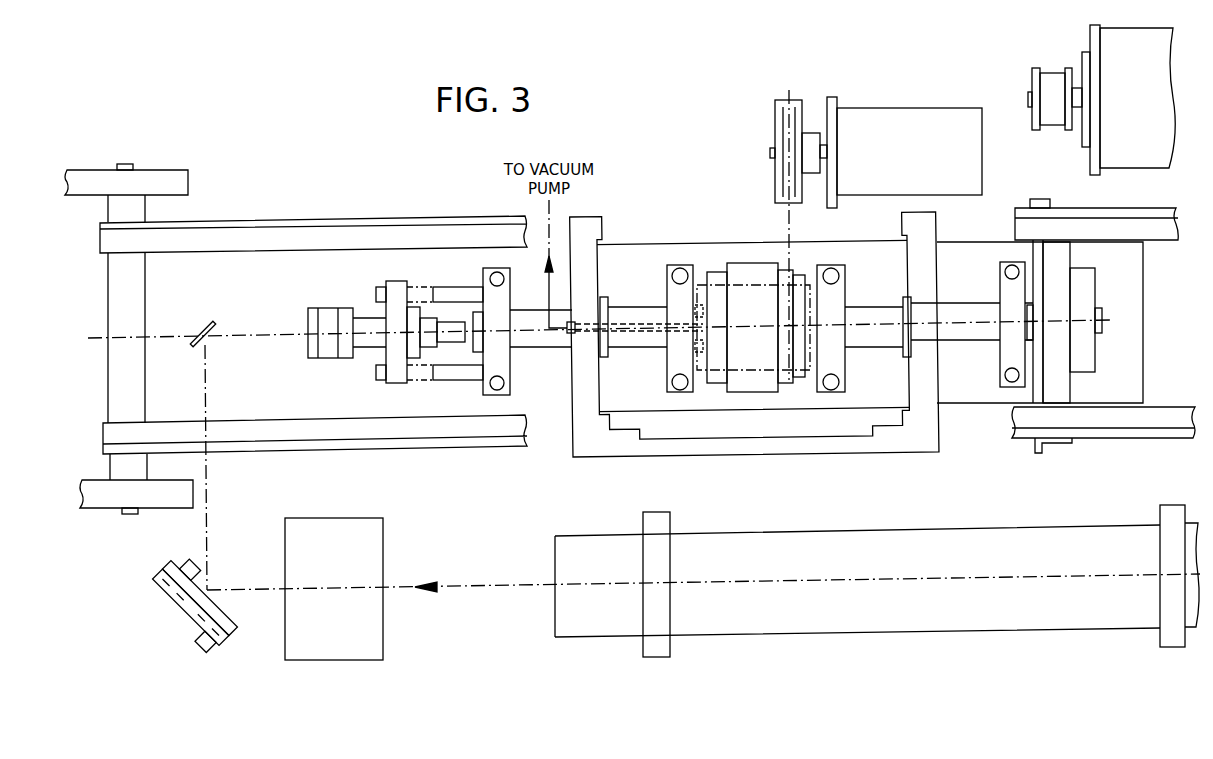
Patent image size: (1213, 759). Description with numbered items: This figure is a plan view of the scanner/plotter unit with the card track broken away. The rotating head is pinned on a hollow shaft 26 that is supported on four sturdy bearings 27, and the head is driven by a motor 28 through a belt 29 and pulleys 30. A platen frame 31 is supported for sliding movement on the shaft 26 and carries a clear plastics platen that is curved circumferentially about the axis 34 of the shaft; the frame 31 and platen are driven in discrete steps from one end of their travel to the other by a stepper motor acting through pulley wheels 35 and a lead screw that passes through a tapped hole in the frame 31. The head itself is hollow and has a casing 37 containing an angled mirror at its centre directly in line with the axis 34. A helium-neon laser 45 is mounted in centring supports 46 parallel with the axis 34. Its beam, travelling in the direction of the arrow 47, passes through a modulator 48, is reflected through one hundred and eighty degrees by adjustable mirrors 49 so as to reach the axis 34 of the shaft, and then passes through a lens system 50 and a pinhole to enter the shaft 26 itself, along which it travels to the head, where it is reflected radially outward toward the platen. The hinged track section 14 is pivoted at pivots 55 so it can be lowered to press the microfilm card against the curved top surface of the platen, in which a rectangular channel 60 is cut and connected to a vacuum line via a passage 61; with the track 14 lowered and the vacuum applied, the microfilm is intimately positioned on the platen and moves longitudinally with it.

The track section 14 is at (343, 222).
The hollow shaft 26 is at (629, 344).
The bearings 27 is at (836, 292).
The motor 28 is at (900, 117).
The belt 29 is at (792, 222).
The pulleys 30 is at (800, 355).
The platen frame 31 is at (925, 278).
The axis 34 is at (264, 340).
The pulley wheels 35 is at (1050, 203).
The casing 37 is at (747, 382).
The helium-neon laser 45 is at (877, 580).
The centring supports 46 is at (658, 523).
The beam direction arrow 47 is at (703, 578).
The modulator 48 is at (334, 589).
The adjustable mirrors 49 is at (201, 330).
The lens system 50 is at (330, 308).
The pivots 55 is at (127, 165).
The rectangular channel 60 is at (715, 283).
The passage 61 is at (630, 318).